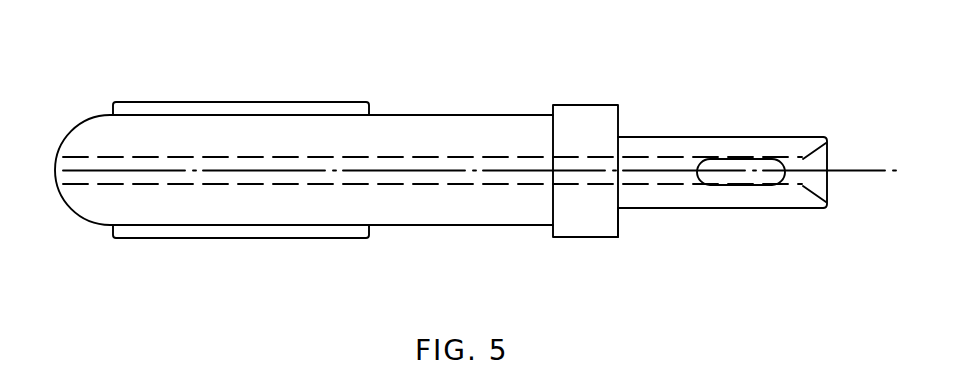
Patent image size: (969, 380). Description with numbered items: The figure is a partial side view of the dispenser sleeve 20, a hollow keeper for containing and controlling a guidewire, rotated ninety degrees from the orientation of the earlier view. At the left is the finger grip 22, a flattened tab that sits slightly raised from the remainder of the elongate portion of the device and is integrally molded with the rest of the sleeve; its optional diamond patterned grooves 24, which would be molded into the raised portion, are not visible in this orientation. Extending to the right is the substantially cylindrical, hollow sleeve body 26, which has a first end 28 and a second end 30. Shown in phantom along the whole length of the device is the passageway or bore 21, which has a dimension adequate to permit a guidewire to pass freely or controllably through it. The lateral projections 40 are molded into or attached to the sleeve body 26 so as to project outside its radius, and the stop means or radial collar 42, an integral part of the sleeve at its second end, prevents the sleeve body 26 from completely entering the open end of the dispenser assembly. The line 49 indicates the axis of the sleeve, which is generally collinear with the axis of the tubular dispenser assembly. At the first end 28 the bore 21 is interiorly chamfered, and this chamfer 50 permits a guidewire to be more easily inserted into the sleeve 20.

The dispenser sleeve 20 is at (660, 80).
The passageway or bore 21 is at (72, 163).
The finger grip 22 is at (186, 252).
The diamond patterned grooves 24 is at (282, 101).
The sleeve body 26 is at (695, 197).
The first end 28 is at (800, 134).
The second end 30 is at (582, 238).
The lateral projections 40 is at (745, 165).
The stop means or radial collar 42 is at (620, 225).
The axis line 49 is at (871, 175).
The chamfer 50 is at (827, 160).